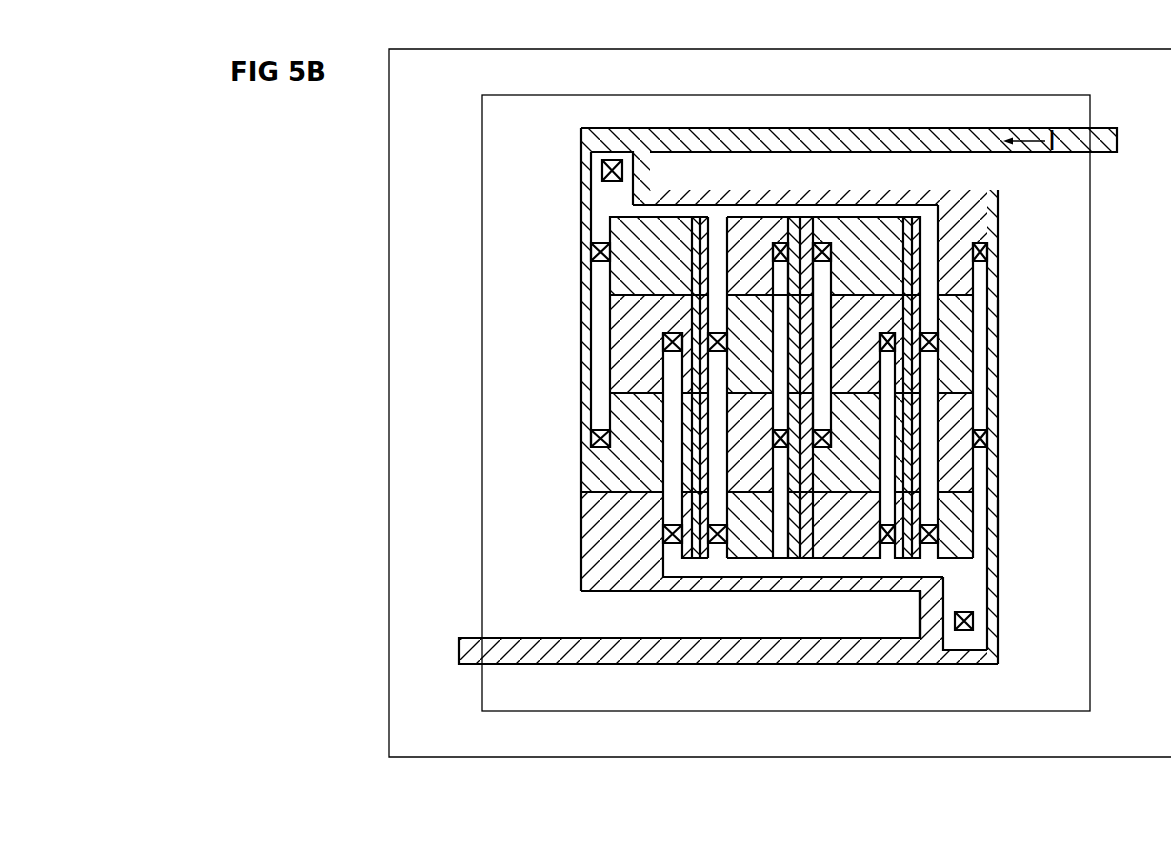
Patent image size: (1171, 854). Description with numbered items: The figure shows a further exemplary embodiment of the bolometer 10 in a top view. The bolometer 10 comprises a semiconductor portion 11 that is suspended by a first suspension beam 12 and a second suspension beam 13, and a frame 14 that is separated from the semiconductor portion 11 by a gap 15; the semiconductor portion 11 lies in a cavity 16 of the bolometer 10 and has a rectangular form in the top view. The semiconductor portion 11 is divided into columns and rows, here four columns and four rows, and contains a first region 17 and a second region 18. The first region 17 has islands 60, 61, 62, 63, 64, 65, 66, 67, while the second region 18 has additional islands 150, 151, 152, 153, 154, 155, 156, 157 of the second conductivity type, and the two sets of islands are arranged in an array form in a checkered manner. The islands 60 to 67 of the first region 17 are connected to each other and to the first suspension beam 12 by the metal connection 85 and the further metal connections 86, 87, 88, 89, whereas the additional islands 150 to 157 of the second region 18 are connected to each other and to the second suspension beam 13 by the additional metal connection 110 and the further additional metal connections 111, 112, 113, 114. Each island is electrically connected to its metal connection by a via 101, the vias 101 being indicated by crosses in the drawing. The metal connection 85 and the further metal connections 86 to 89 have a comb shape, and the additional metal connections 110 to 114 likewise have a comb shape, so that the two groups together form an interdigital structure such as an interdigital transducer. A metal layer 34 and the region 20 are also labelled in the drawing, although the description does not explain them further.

The bolometer 10 is at (741, 403).
The semiconductor portion 11 is at (557, 377).
The first suspension beam 12 is at (884, 128).
The second suspension beam 13 is at (748, 664).
The frame 14 is at (389, 408).
The gap 15 is at (482, 283).
The cavity 16 is at (1080, 297).
The first region 17 is at (583, 416).
The second region 18 is at (583, 343).
The source region 20 is at (583, 390).
The metallization layer 34 is at (500, 650).
The island 60 is at (583, 481).
The island 61 is at (583, 238).
The island 62 is at (705, 585).
The island 63 is at (756, 393).
The island 64 is at (820, 498).
The island 65 is at (860, 298).
The island 66 is at (995, 517).
The island 67 is at (1000, 341).
The metal connection 85 is at (600, 170).
The further metal connection 86 is at (752, 210).
The further metal connection 87 is at (720, 238).
The further metal connection 88 is at (825, 240).
The further metal connection 89 is at (925, 218).
The via 101 is at (592, 440).
The additional metal connection 110 is at (666, 516).
The further additional metal connection 111 is at (745, 567).
The further additional metal connection 112 is at (780, 548).
The further additional metal connection 113 is at (870, 462).
The further additional metal connection 114 is at (980, 548).
The additional island 150 is at (607, 580).
The additional island 151 is at (583, 314).
The additional island 152 is at (722, 502).
The additional island 153 is at (755, 298).
The additional island 154 is at (840, 592).
The additional island 155 is at (858, 393).
The additional island 156 is at (992, 444).
The additional island 157 is at (988, 280).